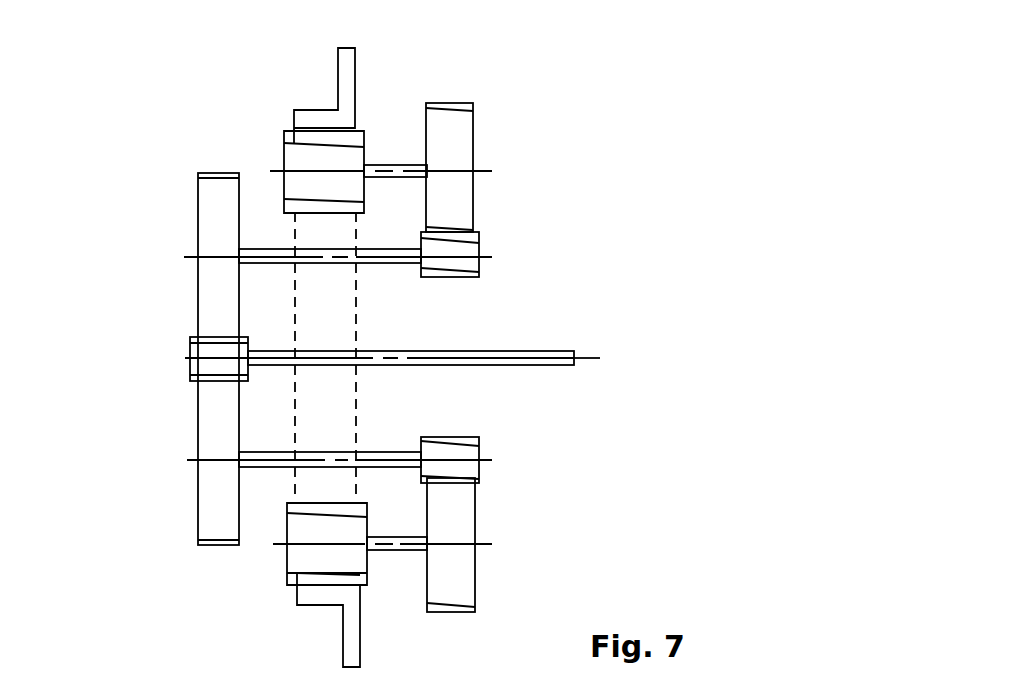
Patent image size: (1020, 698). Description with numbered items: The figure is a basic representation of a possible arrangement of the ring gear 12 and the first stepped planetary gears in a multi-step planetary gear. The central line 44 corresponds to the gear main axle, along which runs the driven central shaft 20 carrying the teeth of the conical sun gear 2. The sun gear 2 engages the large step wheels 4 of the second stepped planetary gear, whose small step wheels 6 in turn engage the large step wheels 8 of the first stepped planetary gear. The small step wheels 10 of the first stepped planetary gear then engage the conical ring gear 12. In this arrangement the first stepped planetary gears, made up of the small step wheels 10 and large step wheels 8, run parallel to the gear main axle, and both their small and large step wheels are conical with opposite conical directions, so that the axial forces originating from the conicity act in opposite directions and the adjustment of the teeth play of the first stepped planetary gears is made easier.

The sun gear 2 is at (203, 349).
The large step wheels of the second stepped planetary gear 4 is at (210, 183).
The small step wheels of the second stepped planetary gear 6 is at (465, 272).
The large step wheels of the first stepped planetary gear 8 is at (455, 118).
The small step wheels of the first stepped planetary gear 10 is at (365, 133).
The ring gear 12 is at (343, 112).
The driven central shaft 20 is at (552, 352).
The central line 44 is at (587, 357).